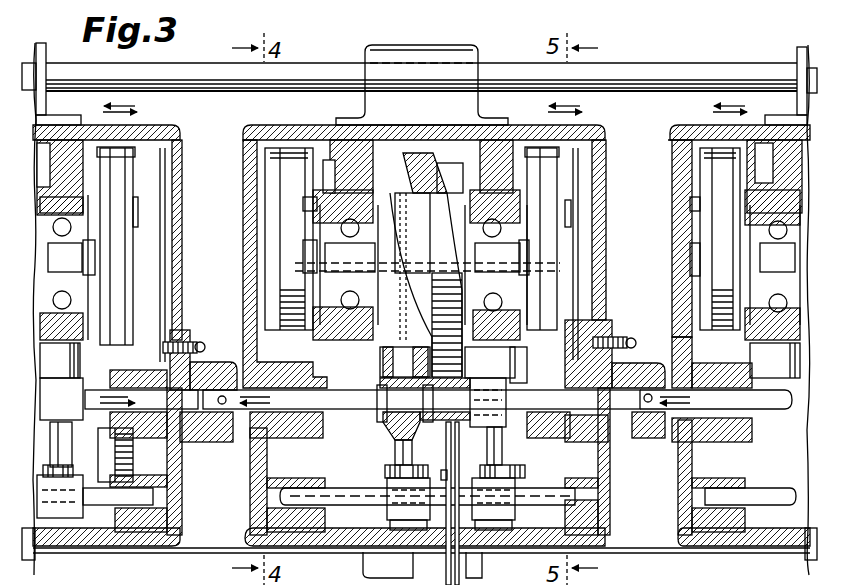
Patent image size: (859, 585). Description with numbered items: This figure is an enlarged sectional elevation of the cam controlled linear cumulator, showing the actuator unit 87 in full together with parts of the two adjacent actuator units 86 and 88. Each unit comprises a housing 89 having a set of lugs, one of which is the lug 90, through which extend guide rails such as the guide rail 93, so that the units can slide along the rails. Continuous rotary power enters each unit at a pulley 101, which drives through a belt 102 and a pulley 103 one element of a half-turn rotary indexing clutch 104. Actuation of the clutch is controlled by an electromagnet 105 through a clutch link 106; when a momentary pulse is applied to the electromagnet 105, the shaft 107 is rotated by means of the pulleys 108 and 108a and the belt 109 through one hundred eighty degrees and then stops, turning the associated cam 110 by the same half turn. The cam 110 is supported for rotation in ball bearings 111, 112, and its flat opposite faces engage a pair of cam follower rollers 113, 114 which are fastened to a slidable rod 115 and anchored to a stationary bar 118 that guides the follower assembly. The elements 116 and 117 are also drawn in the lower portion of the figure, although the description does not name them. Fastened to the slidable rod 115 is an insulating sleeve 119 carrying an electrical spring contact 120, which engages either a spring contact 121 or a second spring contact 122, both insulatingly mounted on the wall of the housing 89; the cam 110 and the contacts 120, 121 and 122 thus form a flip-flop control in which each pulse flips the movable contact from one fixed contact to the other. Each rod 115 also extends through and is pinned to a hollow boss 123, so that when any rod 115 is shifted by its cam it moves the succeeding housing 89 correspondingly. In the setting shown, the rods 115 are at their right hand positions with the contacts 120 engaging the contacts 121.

The actuator unit 86 is at (688, 125).
The actuator unit 87 is at (265, 125).
The actuator unit 88 is at (178, 126).
The housing 89 is at (180, 515).
The lug 90 is at (44, 46).
The guide rail 93 is at (624, 72).
The pulley 101 is at (133, 358).
The belt 102 is at (130, 294).
The pulley 103 is at (130, 262).
The rotary indexing clutch 104 is at (327, 167).
The electromagnet 105 is at (327, 350).
The clutch link 106 is at (386, 193).
The shaft 107 is at (94, 278).
The pulley 108 is at (270, 310).
The pulley 108a is at (280, 188).
The belt 109 is at (290, 172).
The cam 110 is at (427, 282).
The ball bearing 111 is at (556, 284).
The ball bearing 112 is at (283, 265).
The cam follower roller 113 is at (385, 365).
The cam follower roller 114 is at (283, 381).
The slidable rod 115 is at (438, 402).
The bevel gear 116 is at (405, 446).
The bevel gear 117 is at (67, 458).
The stationary bar 118 is at (105, 508).
The insulating sleeve 119 is at (456, 422).
The electrical spring contact 120 is at (446, 455).
The spring contact 121 is at (460, 527).
The electrical spring contact 122 is at (407, 525).
The hollow boss 123 is at (210, 358).